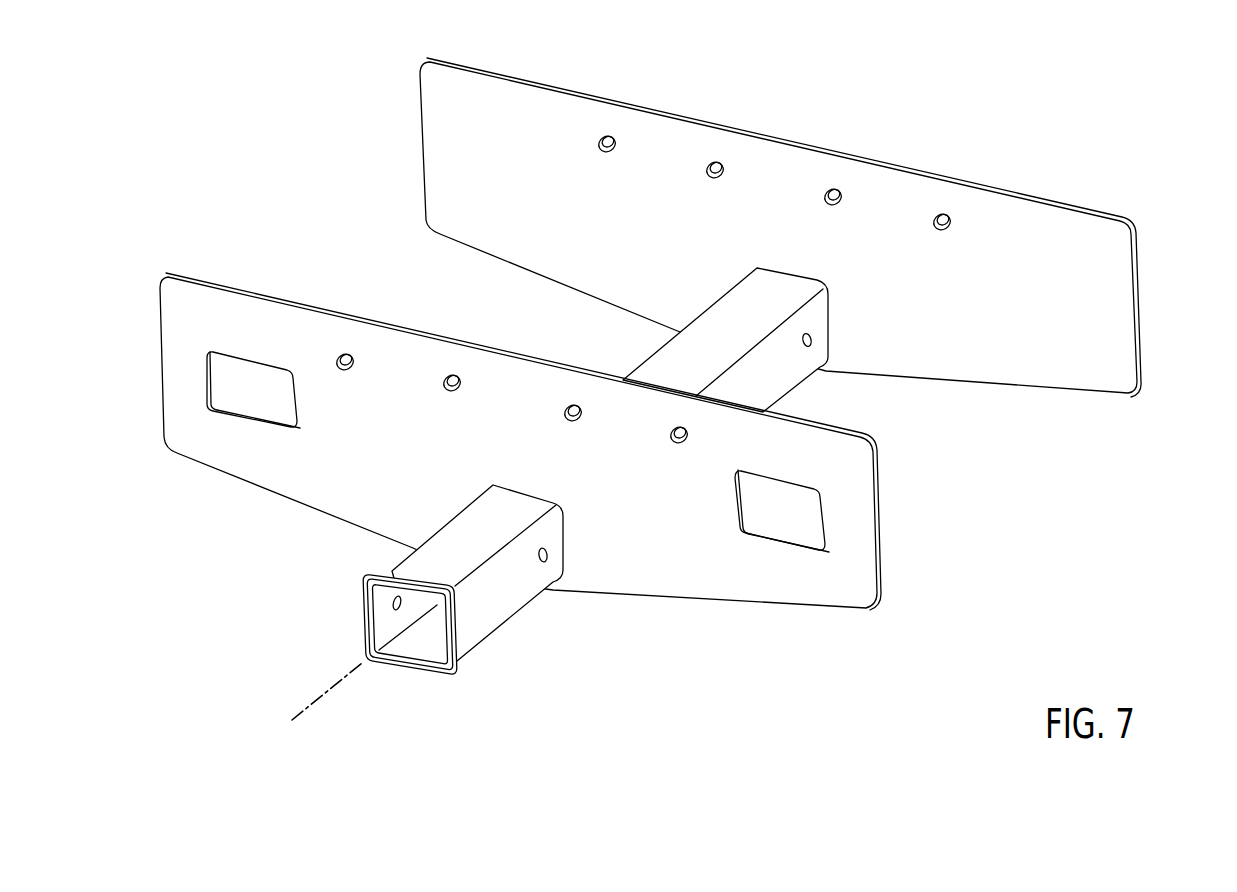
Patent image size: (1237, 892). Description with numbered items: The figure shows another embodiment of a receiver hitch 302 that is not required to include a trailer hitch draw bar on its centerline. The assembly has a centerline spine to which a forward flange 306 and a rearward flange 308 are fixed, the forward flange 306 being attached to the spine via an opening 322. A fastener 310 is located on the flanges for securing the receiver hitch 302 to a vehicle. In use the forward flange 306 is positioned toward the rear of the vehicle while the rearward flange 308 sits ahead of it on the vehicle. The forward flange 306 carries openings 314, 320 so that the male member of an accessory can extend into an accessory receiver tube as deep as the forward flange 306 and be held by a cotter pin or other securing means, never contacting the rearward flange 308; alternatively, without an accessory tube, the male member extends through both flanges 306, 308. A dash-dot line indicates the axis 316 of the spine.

The receiver hitch 302 is at (1172, 116).
The forward flange 306 is at (566, 449).
The rearward flange 308 is at (826, 227).
The fastener 310 is at (616, 142).
The opening 314 is at (828, 539).
The central axis 316 is at (332, 682).
The opening 320 is at (249, 355).
The opening 322 is at (568, 537).